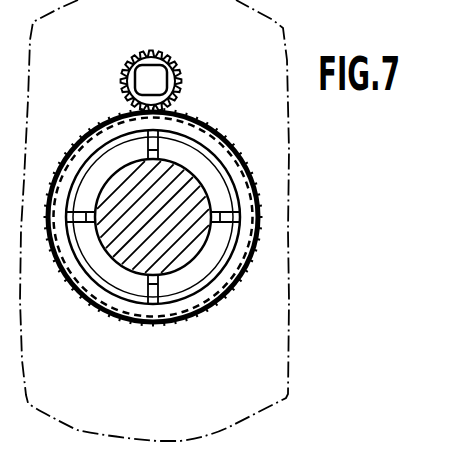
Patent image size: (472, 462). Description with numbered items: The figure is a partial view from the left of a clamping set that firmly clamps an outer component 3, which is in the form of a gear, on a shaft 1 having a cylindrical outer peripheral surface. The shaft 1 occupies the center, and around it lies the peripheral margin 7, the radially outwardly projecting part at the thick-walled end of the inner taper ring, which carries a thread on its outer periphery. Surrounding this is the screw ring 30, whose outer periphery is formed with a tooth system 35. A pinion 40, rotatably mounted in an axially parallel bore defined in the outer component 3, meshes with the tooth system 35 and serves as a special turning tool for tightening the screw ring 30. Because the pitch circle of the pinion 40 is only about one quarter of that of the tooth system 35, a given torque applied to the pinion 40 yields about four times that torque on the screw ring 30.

The shaft 1 is at (118, 250).
The outer component 3 is at (280, 282).
The peripheral margin 7 is at (202, 167).
The screw ring 30 is at (266, 187).
The tooth system 35 is at (117, 111).
The pinion 40 is at (192, 76).